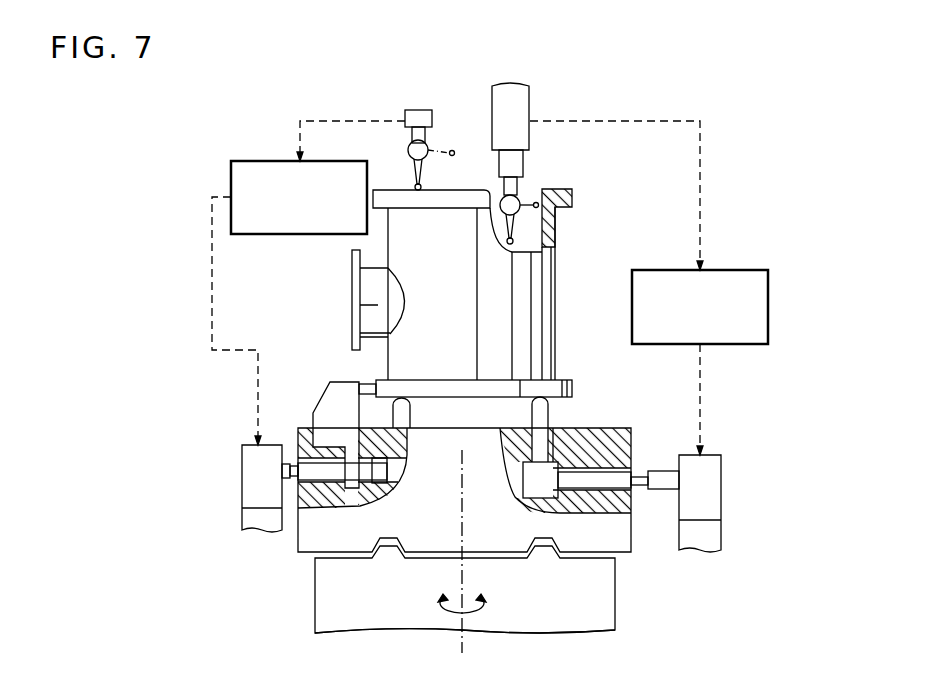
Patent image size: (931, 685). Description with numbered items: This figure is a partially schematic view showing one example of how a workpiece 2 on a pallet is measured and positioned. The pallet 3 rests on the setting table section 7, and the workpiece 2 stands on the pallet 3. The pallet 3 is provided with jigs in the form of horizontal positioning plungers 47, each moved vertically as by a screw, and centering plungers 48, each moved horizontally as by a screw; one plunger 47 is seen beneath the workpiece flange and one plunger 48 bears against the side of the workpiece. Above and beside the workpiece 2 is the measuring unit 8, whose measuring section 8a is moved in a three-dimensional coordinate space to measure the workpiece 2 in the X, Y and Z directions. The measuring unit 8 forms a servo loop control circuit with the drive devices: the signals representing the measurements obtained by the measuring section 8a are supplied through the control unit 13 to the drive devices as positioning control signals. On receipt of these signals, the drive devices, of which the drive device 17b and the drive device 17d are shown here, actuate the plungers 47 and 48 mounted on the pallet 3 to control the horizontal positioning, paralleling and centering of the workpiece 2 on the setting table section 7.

The workpiece 2 is at (568, 297).
The pallet 3 is at (413, 540).
The setting table section 7 is at (520, 635).
The measuring unit 8 is at (418, 110).
The measuring section 8a is at (445, 147).
The control unit 13 is at (269, 160).
The drive device 17b is at (722, 502).
The drive device 17d is at (242, 467).
The horizontal positioning plunger 47 is at (552, 413).
The centering plunger 48 is at (322, 397).